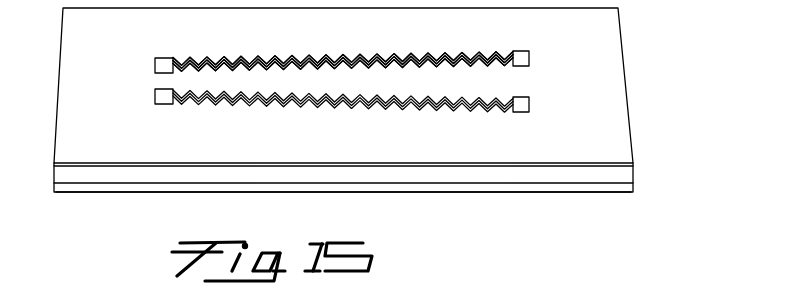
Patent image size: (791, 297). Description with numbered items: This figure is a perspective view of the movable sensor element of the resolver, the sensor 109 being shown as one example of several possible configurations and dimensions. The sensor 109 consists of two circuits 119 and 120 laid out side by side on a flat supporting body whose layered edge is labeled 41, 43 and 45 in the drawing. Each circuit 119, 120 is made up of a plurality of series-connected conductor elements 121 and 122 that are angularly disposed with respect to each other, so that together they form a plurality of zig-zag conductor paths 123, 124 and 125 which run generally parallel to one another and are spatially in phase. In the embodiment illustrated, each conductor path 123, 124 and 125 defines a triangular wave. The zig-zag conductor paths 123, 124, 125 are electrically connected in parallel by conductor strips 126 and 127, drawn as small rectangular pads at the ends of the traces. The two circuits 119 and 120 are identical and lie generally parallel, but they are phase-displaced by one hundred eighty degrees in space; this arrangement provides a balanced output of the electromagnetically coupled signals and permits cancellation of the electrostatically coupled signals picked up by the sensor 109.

The sensor 109 is at (369, 116).
The first layer 41 is at (117, 164).
The second layer 43 is at (177, 179).
The third layer 45 is at (292, 190).
The circuit 119 is at (305, 45).
The circuit 120 is at (310, 115).
The conductor elements 121 is at (452, 66).
The conductor elements 122 is at (449, 104).
The zig-zag conductor path 123 is at (201, 58).
The zig-zag conductor path 124 is at (254, 60).
The zig-zag conductor path 125 is at (184, 63).
The conductor strip 126 is at (155, 99).
The conductor strip 127 is at (155, 63).